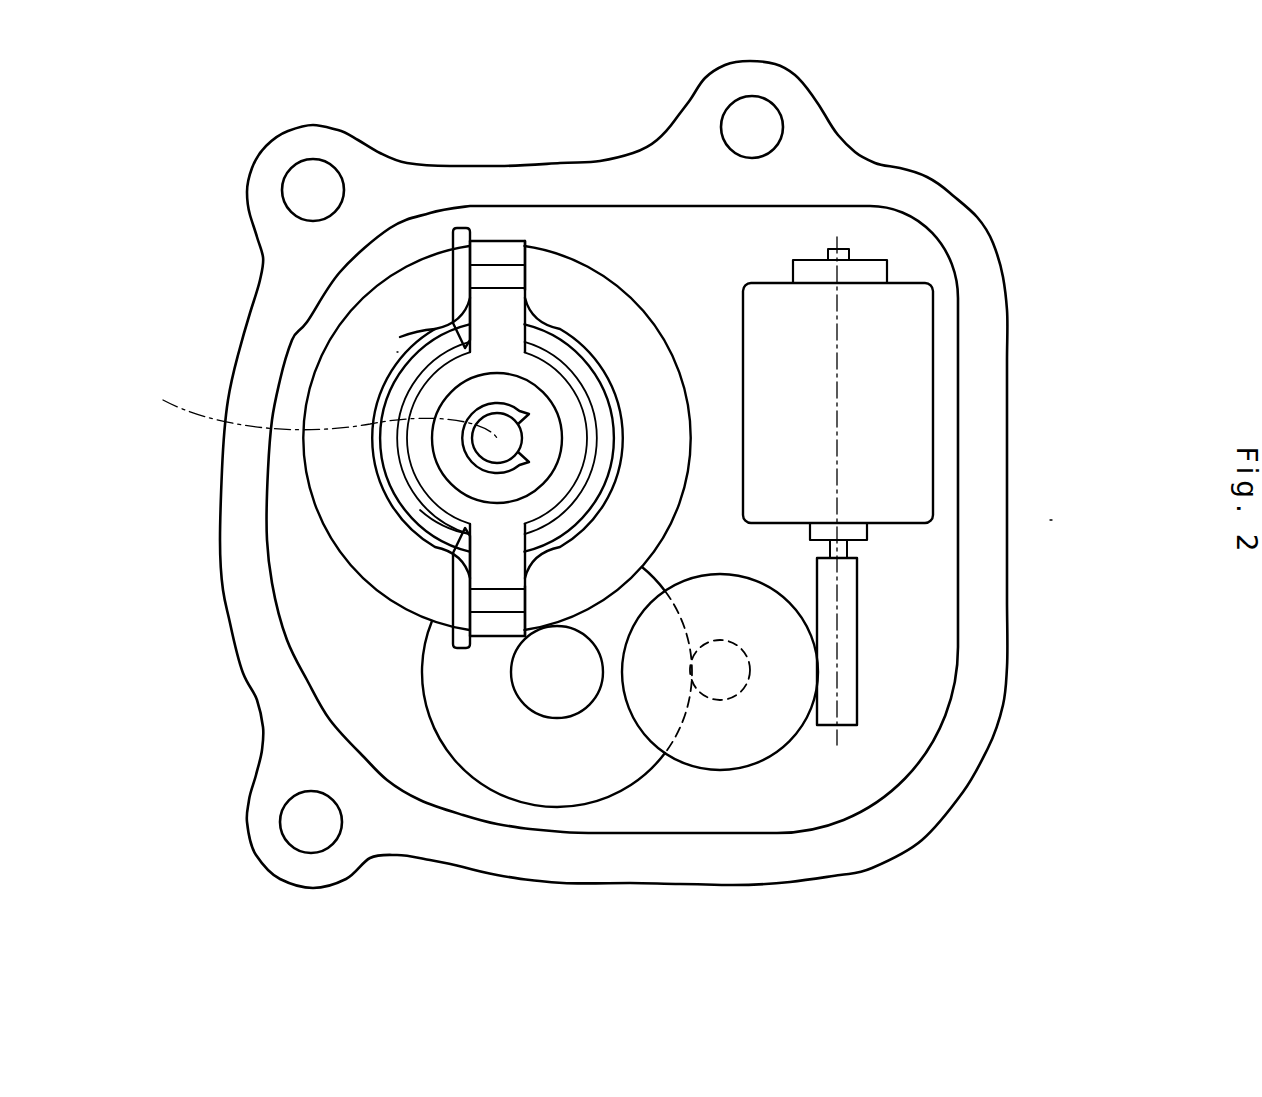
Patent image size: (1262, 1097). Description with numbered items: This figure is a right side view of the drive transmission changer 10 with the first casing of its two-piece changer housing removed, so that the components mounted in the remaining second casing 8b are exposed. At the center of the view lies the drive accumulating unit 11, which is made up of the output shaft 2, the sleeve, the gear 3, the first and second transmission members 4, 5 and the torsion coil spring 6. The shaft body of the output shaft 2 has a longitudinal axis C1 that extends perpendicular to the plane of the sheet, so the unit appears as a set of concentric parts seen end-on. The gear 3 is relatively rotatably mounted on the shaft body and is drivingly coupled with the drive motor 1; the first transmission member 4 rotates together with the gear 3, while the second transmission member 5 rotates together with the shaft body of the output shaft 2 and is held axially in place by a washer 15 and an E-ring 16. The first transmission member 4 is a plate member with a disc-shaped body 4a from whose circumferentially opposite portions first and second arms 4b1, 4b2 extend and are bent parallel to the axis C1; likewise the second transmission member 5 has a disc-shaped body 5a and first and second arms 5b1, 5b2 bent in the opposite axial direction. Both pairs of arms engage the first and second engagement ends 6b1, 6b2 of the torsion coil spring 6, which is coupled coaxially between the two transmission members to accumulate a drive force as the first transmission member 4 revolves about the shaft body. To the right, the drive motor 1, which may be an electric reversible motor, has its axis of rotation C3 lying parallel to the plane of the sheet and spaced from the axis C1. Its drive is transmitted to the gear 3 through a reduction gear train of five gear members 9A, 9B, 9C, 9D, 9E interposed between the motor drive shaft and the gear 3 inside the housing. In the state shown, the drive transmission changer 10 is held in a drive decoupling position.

The drive motor 1 is at (932, 388).
The output shaft 2 is at (459, 431).
The gear 3 is at (607, 276).
The first transmission member 4 is at (418, 340).
The disc-shaped body 4a is at (392, 390).
The first arm 4b1 is at (515, 238).
The second arm 4b2 is at (497, 642).
The second transmission member 5 is at (450, 567).
The disc-shaped body 5a is at (417, 512).
The first arm 5b1 is at (488, 288).
The second arm 5b2 is at (450, 650).
The torsion coil spring 6 is at (605, 382).
The first engagement end 6b1 is at (450, 282).
The second engagement end 6b2 is at (452, 590).
The second casing 8b is at (245, 680).
The gear member 9A is at (857, 697).
The gear member 9B is at (770, 758).
The gear member 9C is at (717, 707).
The gear member 9D is at (620, 790).
The gear member 9E is at (568, 718).
The drive transmission changer 10 is at (1058, 515).
The drive accumulating unit 11 is at (388, 301).
The washer 15 is at (390, 344).
The E-ring 16 is at (447, 570).
The longitudinal axis C1 is at (311, 410).
The axis of rotation C3 is at (845, 448).